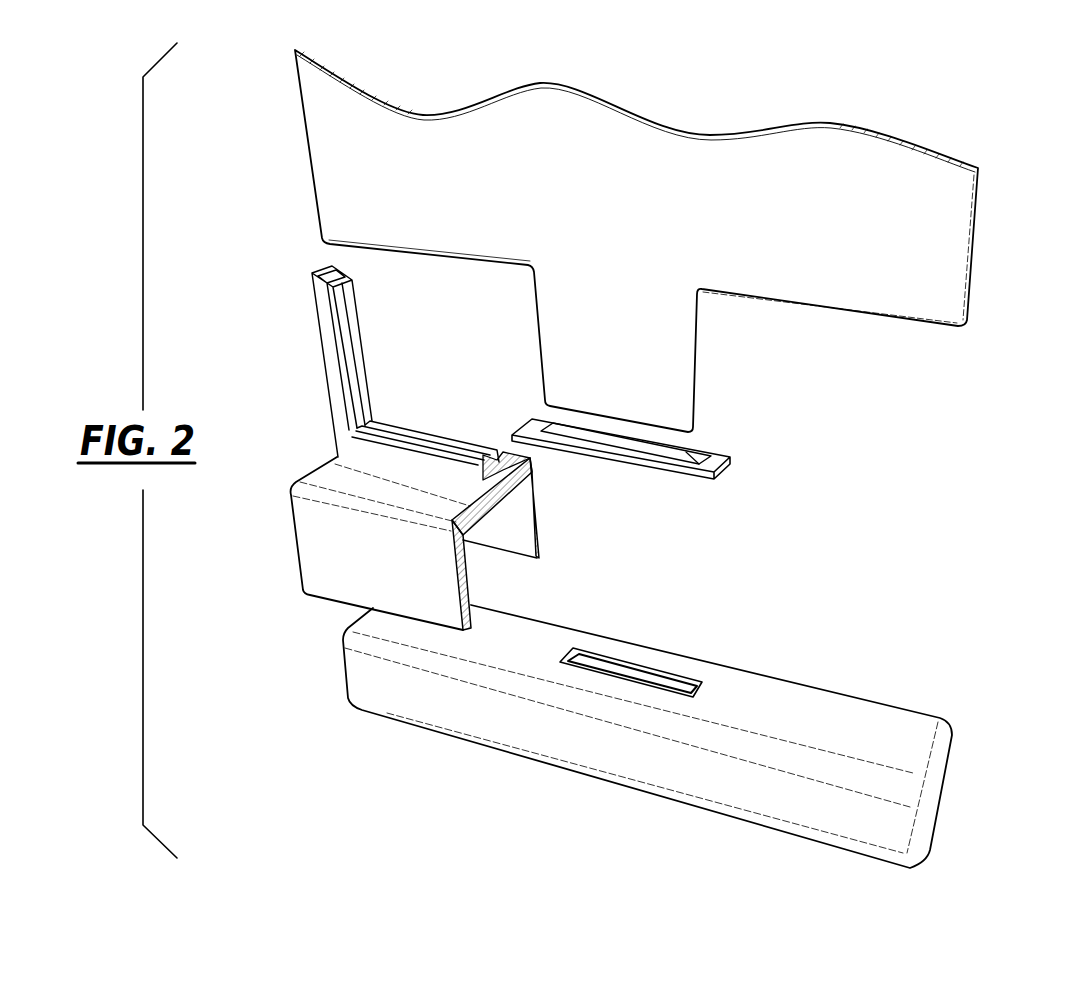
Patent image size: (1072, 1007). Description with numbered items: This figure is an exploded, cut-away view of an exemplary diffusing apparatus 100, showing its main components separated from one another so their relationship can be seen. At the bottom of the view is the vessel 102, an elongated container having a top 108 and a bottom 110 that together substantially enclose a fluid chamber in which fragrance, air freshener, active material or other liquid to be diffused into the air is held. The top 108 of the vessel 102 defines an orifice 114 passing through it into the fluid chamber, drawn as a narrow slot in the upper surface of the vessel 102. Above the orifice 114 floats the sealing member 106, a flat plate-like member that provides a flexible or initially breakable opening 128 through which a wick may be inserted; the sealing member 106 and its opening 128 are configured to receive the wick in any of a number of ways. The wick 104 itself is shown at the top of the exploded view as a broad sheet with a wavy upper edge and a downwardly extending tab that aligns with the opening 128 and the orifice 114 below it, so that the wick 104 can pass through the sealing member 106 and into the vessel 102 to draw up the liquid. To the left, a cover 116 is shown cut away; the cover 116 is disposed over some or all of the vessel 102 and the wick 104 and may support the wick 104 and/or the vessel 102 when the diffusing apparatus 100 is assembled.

The diffusing apparatus 100 is at (983, 111).
The vessel 102 is at (701, 732).
The wick 104 is at (943, 257).
The sealing member 106 is at (674, 435).
The top 108 is at (657, 732).
The bottom 110 is at (822, 843).
The orifice 114 is at (672, 672).
The cover 116 is at (337, 536).
The opening 128 is at (700, 441).